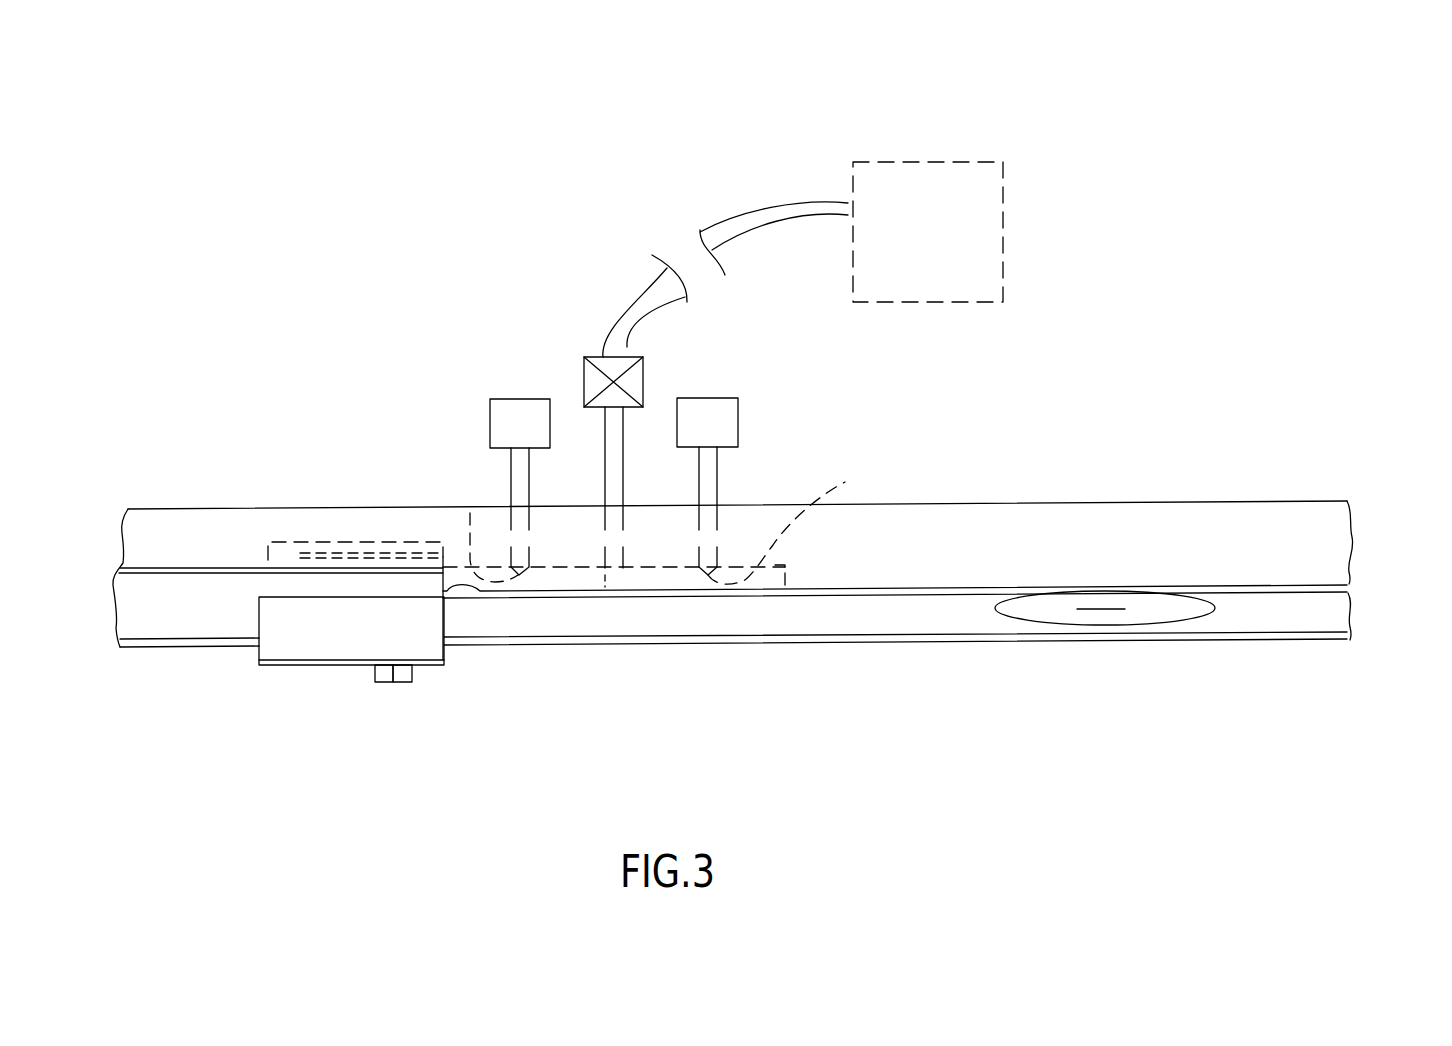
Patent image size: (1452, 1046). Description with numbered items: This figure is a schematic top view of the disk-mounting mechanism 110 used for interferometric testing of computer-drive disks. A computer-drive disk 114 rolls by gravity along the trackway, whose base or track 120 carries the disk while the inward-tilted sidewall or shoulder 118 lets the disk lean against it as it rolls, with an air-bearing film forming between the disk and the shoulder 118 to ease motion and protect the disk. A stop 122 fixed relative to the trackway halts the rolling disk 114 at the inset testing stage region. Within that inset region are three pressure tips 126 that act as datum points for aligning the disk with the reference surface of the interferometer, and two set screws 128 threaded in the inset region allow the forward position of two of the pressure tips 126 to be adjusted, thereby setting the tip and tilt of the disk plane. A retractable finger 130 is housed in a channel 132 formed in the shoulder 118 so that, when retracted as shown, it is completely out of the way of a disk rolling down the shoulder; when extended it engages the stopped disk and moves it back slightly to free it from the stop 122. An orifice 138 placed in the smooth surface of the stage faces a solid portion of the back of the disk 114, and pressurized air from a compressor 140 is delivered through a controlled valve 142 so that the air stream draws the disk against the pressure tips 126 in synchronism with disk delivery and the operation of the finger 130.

The disk-mounting mechanism 110 is at (1153, 478).
The computer-drive disk 114 is at (1062, 605).
The shoulder 118 is at (1295, 590).
The track 120 is at (1233, 612).
The stop 122 is at (290, 650).
The pressure tips 126 is at (470, 513).
The set screws 128 is at (512, 405).
The retractable finger 130 is at (420, 554).
The channel 132 is at (282, 557).
The orifice 138 is at (605, 590).
The compressor 140 is at (968, 222).
The valve 142 is at (645, 370).